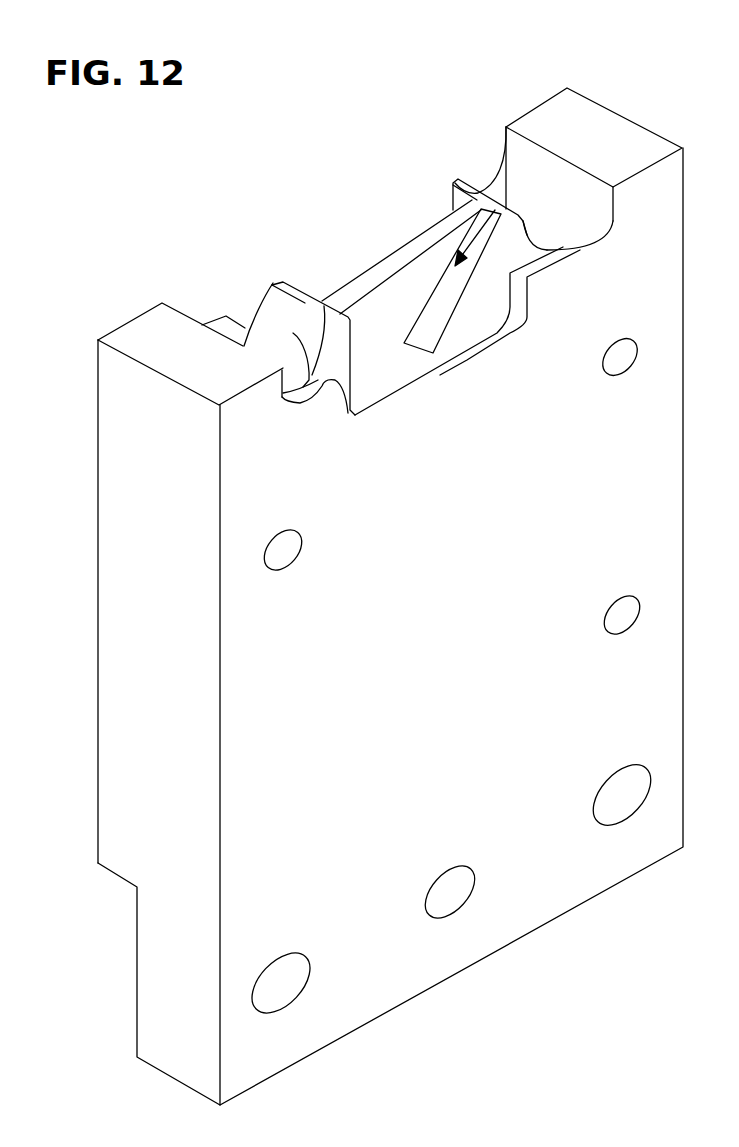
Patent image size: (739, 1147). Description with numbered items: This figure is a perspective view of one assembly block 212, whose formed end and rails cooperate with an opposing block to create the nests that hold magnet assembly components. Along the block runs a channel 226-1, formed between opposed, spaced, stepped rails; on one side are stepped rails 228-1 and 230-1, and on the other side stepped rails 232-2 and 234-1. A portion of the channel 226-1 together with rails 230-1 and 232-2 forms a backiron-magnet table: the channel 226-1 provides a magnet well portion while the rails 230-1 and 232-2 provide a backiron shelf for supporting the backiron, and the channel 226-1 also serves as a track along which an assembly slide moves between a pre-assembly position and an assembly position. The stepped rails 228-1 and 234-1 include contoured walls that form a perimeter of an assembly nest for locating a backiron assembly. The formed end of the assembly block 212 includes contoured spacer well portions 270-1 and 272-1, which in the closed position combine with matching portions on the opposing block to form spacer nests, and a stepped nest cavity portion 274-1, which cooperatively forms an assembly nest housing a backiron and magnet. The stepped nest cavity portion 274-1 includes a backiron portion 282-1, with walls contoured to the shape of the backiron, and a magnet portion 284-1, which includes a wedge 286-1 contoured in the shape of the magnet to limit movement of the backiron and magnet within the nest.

The assembly block 212 is at (368, 180).
The stepped rail 228-1 is at (130, 327).
The stepped rail 234-1 is at (567, 88).
The contoured spacer well portion 272-1 is at (567, 183).
The magnet portion 284-1 is at (506, 127).
The backiron portion 282-1 is at (613, 222).
The stepped rail 232-2 is at (452, 205).
The channel 226-1 is at (380, 255).
The wedge 286-1 is at (455, 285).
The stepped rail 230-1 is at (263, 295).
The contoured spacer well portion 270-1 is at (285, 398).
The stepped nest cavity portion 274-1 is at (382, 386).